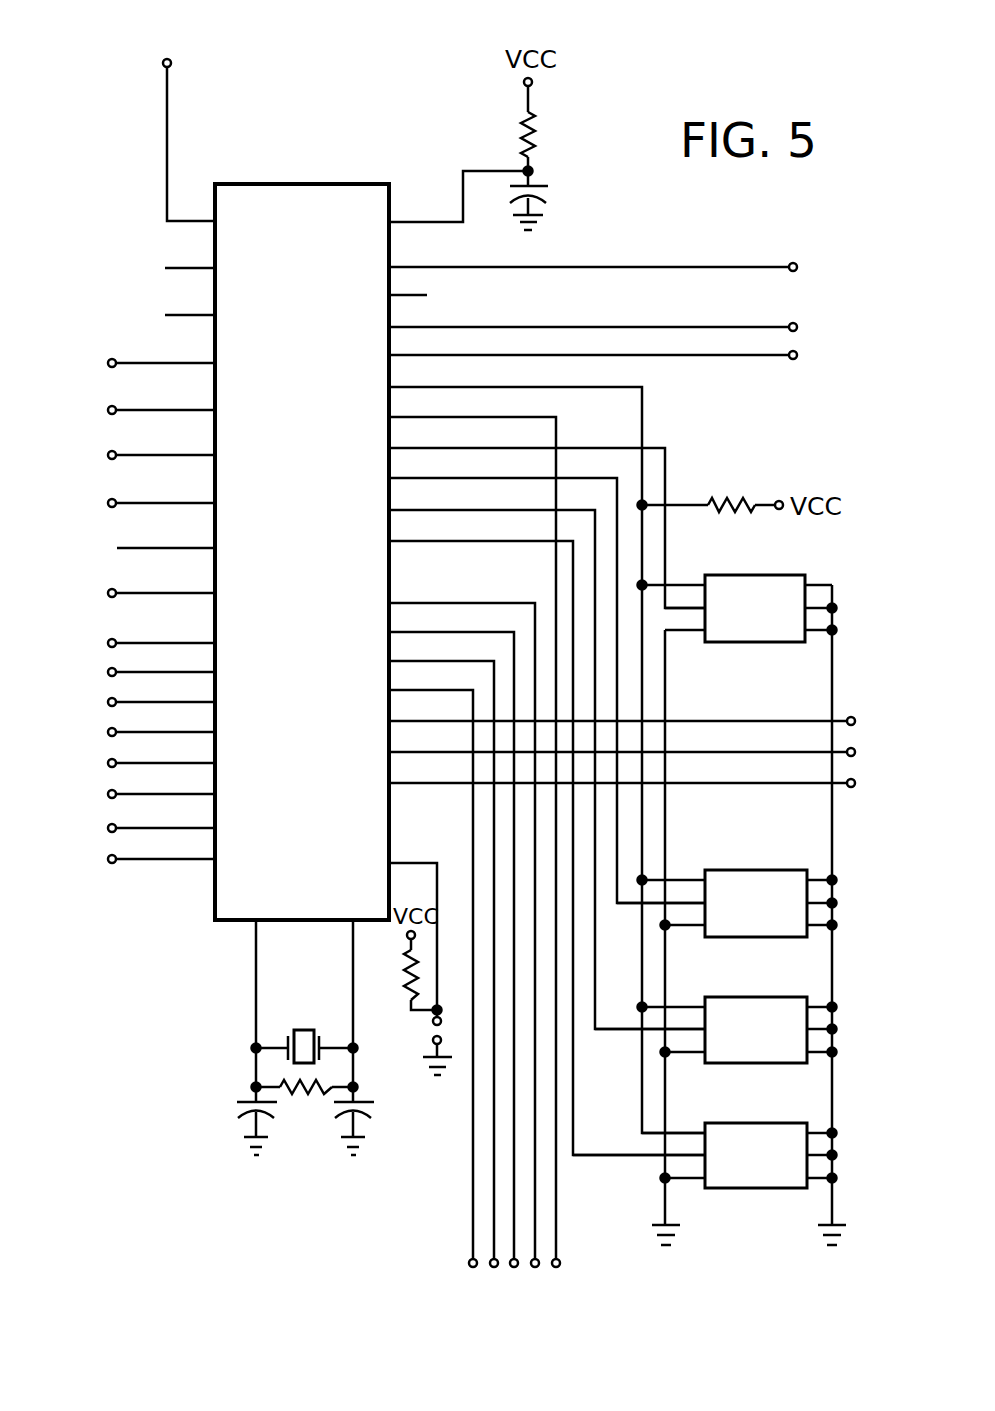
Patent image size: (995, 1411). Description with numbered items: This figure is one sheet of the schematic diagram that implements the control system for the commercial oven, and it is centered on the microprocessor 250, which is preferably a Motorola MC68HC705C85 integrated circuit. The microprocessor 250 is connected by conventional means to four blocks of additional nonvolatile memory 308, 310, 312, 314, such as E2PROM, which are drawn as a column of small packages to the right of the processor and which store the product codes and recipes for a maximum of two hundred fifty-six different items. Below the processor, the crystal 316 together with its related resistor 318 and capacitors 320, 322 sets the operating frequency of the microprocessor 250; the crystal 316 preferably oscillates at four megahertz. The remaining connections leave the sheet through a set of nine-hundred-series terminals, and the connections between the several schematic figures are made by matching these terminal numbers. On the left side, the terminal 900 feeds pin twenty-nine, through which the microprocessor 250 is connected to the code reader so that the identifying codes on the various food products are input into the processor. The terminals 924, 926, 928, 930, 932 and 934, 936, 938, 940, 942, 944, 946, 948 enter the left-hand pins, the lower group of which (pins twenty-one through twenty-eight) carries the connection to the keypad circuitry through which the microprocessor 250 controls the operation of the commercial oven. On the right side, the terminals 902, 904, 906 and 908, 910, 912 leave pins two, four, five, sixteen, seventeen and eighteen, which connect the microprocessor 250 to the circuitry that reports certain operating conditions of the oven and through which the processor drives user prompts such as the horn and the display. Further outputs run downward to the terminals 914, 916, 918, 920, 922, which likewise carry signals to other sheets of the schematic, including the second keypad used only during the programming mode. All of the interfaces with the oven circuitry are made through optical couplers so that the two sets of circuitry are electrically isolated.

The microprocessor 250 is at (292, 184).
The terminal 900 is at (178, 125).
The terminal 902 is at (621, 268).
The terminal 904 is at (621, 328).
The terminal 906 is at (621, 356).
The terminal 908 is at (648, 722).
The terminal 910 is at (648, 753).
The terminal 912 is at (648, 784).
The terminal 914 is at (440, 997).
The terminal 916 is at (493, 1268).
The terminal 918 is at (468, 968).
The terminal 920 is at (536, 1268).
The terminal 922 is at (492, 860).
The terminal 924 is at (134, 363).
The terminal 926 is at (134, 410).
The terminal 928 is at (134, 455).
The terminal 930 is at (134, 503).
The terminal 932 is at (134, 593).
The terminal 934 is at (134, 643).
The terminal 936 is at (134, 672).
The terminal 938 is at (134, 702).
The terminal 940 is at (134, 732).
The terminal 942 is at (134, 763).
The terminal 944 is at (134, 794).
The terminal 946 is at (134, 828).
The terminal 948 is at (134, 859).
The nonvolatile memory 308 is at (781, 576).
The nonvolatile memory 310 is at (778, 871).
The nonvolatile memory 312 is at (778, 998).
The nonvolatile memory 314 is at (778, 1124).
The crystal 316 is at (318, 988).
The resistor 318 is at (308, 1093).
The capacitor 320 is at (241, 1125).
The capacitor 322 is at (367, 1125).